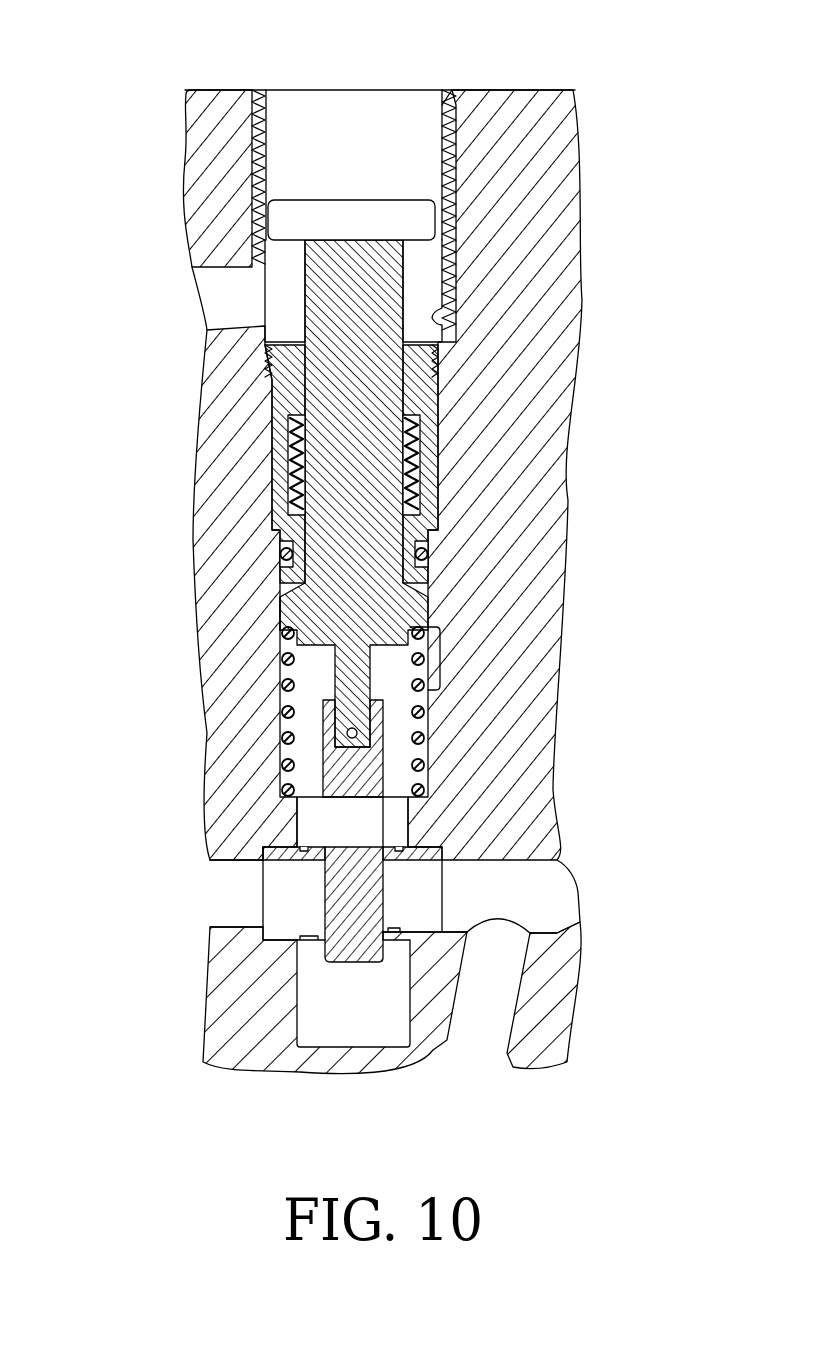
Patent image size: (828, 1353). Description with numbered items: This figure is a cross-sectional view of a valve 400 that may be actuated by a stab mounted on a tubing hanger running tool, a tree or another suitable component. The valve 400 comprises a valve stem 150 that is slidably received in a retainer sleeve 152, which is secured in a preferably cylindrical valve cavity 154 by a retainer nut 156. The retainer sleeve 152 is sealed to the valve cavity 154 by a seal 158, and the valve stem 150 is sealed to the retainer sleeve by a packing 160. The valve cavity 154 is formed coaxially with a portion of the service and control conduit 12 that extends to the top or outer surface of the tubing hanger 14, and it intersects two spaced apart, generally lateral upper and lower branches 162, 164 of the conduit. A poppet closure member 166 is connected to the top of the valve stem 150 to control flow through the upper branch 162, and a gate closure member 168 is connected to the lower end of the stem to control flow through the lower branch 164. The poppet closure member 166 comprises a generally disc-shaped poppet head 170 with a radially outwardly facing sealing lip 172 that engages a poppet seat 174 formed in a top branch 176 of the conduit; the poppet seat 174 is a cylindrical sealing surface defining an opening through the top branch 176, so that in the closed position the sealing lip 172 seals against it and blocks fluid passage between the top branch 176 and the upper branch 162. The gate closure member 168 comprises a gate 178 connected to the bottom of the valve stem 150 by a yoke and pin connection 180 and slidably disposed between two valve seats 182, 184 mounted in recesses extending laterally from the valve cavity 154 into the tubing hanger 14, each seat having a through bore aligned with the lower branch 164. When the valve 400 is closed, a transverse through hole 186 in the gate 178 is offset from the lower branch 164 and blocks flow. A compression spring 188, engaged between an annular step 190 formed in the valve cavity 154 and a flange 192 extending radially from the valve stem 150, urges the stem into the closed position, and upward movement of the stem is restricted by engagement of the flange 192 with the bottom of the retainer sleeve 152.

The service and control conduit 12 is at (500, 1032).
The tubing hanger 14 is at (563, 548).
The valve stem 150 is at (378, 339).
The retainer sleeve 152 is at (277, 457).
The valve cavity 154 is at (432, 318).
The retainer nut 156 is at (437, 358).
The seal 158 is at (422, 553).
The packing 160 is at (413, 458).
The upper branch 162 is at (232, 327).
The lower branch 164 is at (517, 863).
The poppet closure member 166 is at (280, 190).
The gate closure member 168 is at (310, 962).
The poppet head 170 is at (413, 200).
The sealing lip 172 is at (443, 222).
The poppet seat 174 is at (272, 108).
The top branch 176 is at (377, 162).
The gate 178 is at (320, 890).
The yoke and pin connection 180 is at (383, 718).
The valve seat 182 is at (273, 855).
The valve seat 184 is at (497, 823).
The transverse through hole 186 is at (333, 840).
The compression spring 188 is at (443, 653).
The annular step 190 is at (424, 788).
The flange 192 is at (280, 617).
The valve 400 is at (300, 112).